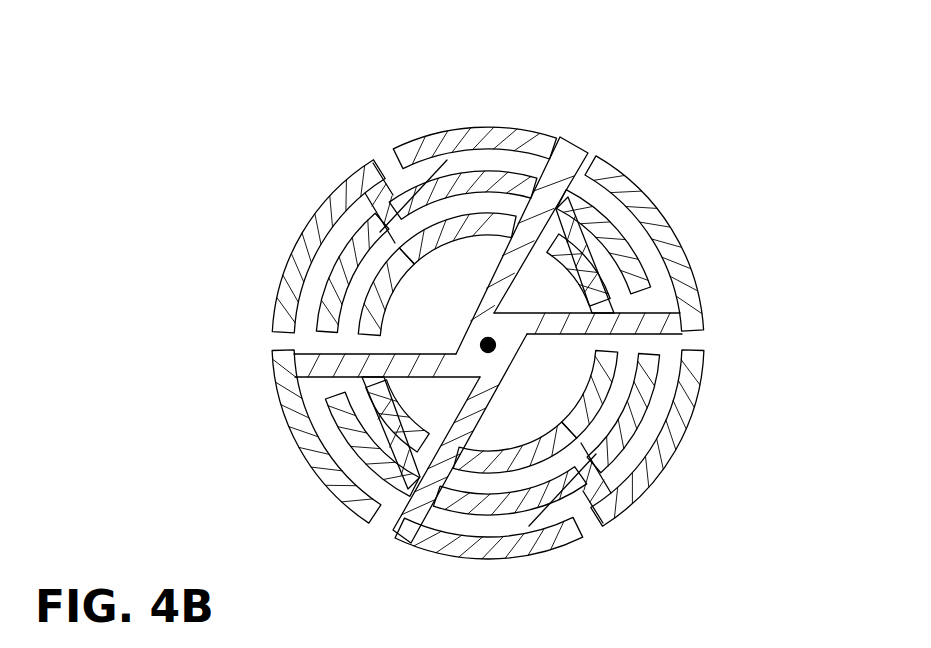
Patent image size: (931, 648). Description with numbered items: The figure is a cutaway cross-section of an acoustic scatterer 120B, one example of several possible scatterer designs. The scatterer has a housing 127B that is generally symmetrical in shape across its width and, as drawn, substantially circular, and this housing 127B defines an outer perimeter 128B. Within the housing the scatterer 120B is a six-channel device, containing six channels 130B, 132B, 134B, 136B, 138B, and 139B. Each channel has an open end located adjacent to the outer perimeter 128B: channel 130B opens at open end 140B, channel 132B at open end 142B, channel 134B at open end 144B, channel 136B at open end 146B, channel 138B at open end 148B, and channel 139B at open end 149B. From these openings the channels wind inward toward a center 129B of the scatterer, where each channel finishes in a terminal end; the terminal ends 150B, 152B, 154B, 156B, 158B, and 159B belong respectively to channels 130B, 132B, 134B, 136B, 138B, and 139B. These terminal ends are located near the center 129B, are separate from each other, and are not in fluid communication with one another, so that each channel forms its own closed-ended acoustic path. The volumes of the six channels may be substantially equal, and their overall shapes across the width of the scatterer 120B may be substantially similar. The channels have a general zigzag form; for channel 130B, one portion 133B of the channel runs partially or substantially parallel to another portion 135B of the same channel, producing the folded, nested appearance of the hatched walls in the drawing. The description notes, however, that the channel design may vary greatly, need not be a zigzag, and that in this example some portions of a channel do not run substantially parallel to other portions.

The acoustic scatterer 120B is at (706, 158).
The housing 127B is at (693, 242).
The perimeter 128B is at (295, 250).
The center 129B is at (520, 455).
The channel 130B is at (462, 168).
The channel 132B is at (653, 258).
The portion of channel 133B is at (491, 163).
The channel 134B is at (648, 415).
The portion of channel 135B is at (440, 190).
The channel 136B is at (462, 522).
The channel 138B is at (363, 413).
The channel 139B is at (340, 215).
The open end 140B is at (385, 162).
The open end 142B is at (600, 165).
The open end 144B is at (695, 343).
The open end 146B is at (592, 525).
The open end 148B is at (387, 523).
The open end 149B is at (277, 343).
The terminal end 150B is at (523, 163).
The terminal end 152B is at (705, 327).
The terminal end 154B is at (628, 462).
The terminal end 156B is at (497, 442).
The terminal end 158B is at (427, 409).
The terminal end 159B is at (407, 320).